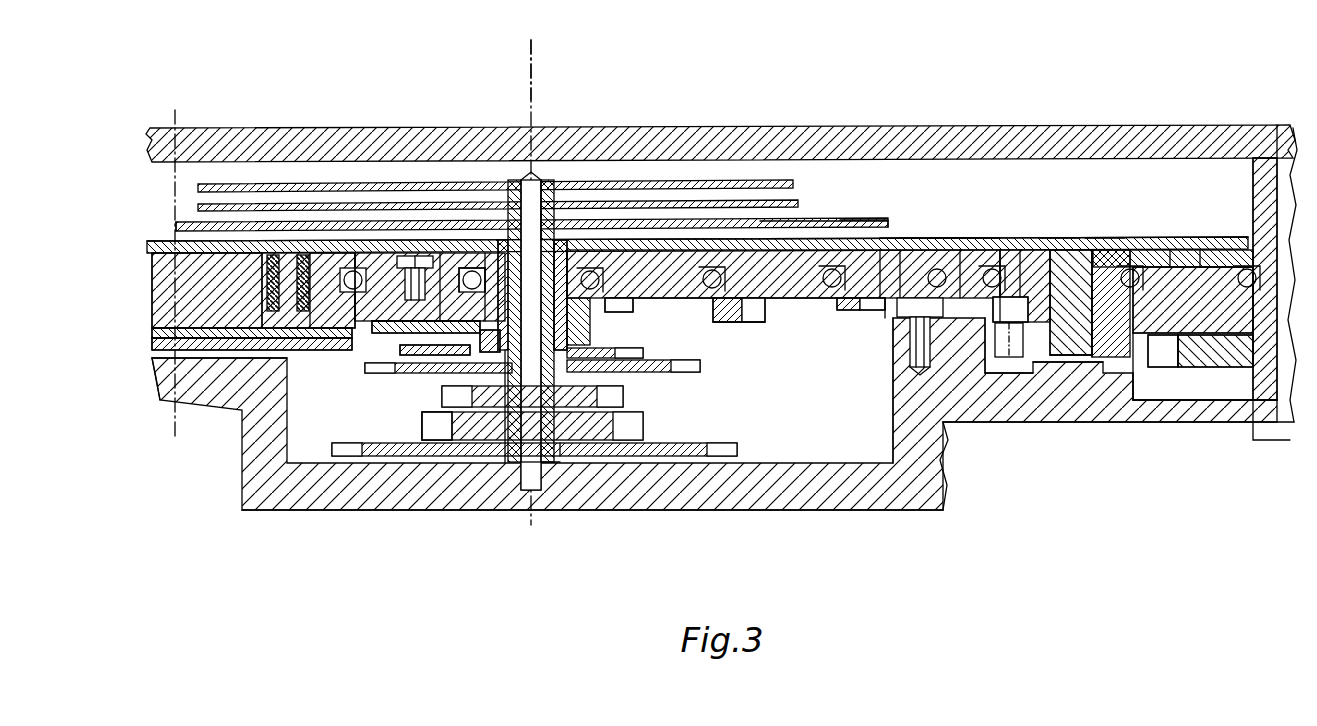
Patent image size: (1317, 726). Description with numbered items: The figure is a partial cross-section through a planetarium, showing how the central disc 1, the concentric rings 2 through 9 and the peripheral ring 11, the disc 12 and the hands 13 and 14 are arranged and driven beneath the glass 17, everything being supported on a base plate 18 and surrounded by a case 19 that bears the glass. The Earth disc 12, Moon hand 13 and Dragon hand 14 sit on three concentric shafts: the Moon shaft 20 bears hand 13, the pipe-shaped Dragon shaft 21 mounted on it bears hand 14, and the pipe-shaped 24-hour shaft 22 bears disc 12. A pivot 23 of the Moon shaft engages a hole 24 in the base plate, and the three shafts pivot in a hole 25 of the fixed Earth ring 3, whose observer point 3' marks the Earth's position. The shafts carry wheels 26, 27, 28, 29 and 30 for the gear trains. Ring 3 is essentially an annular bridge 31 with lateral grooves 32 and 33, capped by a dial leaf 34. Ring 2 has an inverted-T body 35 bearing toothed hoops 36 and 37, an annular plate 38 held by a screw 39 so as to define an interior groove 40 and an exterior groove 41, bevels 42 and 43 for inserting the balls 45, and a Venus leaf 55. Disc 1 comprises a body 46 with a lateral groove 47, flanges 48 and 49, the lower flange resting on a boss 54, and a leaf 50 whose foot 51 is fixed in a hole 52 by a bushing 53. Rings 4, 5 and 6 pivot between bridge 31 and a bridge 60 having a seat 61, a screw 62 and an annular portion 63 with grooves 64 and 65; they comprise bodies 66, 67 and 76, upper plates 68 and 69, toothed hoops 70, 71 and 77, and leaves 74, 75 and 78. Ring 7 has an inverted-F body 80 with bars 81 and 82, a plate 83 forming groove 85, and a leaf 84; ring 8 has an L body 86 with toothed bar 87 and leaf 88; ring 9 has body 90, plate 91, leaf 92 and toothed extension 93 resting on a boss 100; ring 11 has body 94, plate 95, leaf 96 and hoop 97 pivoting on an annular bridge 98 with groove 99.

The central disc 1 is at (153, 240).
The ring 2 is at (415, 257).
The Earth ring 3 is at (479, 185).
The observer point 3' is at (557, 68).
The ring 4 is at (658, 224).
The ring 5 is at (792, 222).
The ring 6 is at (925, 237).
The ring 7 is at (987, 260).
The ring 8 is at (1075, 255).
The ring 9 is at (1132, 260).
The peripheral ring 11 is at (1195, 255).
The disc 12 is at (856, 222).
The first hand 13 is at (648, 236).
The second hand 14 is at (720, 237).
The glass 17 is at (1035, 237).
The base plate 18 is at (305, 492).
The case 19 is at (1270, 422).
The Moon shaft 20 is at (518, 470).
The Dragon shaft 21 is at (558, 258).
The 24-hour shaft 22 is at (570, 258).
The pivot 23 is at (537, 492).
The hole 24 is at (548, 470).
The hole 25 is at (470, 462).
The wheel 26 is at (700, 367).
The wheel 27 is at (660, 352).
The wheel 28 is at (623, 397).
The wheel 29 is at (643, 426).
The wheel 30 is at (740, 448).
The bridge 31 is at (598, 456).
The groove 32 is at (400, 373).
The groove 33 is at (548, 200).
The annular leaf 34 is at (600, 248).
The annular body 35 is at (422, 425).
The hoop 36 is at (468, 333).
The hoop 37 is at (420, 333).
The annular plate 38 is at (462, 292).
The screw 39 is at (445, 270).
The interior groove 40 is at (382, 356).
The exterior groove 41 is at (445, 248).
The bevel 42 is at (386, 262).
The bevel 43 is at (500, 252).
The balls 45 is at (353, 268).
The body 46 is at (165, 290).
The lateral groove 47 is at (337, 255).
The flange 48 is at (345, 340).
The flange 49 is at (332, 350).
The circular leaf 50 is at (215, 238).
The foot 51 is at (303, 255).
The hole 52 is at (303, 350).
The bushing 53 is at (272, 255).
The boss 54 is at (225, 380).
The annular leaf 55 is at (375, 242).
The bridge 60 is at (888, 322).
The seat 61 is at (920, 368).
The screw 62 is at (897, 365).
The annular portion 63 is at (950, 238).
The groove 64 is at (915, 250).
The groove 65 is at (965, 250).
The body 66 is at (667, 300).
The body 67 is at (882, 335).
The upper plate 68 is at (742, 322).
The upper plate 69 is at (898, 238).
The hoop 70 is at (626, 312).
The hoop 71 is at (856, 312).
The annular leaf 74 is at (760, 260).
The annular leaf 75 is at (875, 250).
The annular body 76 is at (792, 300).
The hoop 77 is at (775, 335).
The annular leaf 78 is at (832, 240).
The body 80 is at (1060, 238).
The lower bar 81 is at (970, 392).
The median bar 82 is at (1010, 309).
The plate 83 is at (1020, 258).
The annular leaf 84 is at (1030, 255).
The groove 85 is at (1046, 425).
The body 86 is at (1100, 238).
The horizontal bar 87 is at (1002, 392).
The annular leaf 88 is at (1105, 252).
The body 90 is at (1090, 425).
The upper plate 91 is at (1145, 260).
The annular leaf 92 is at (1180, 252).
The horizontal extension 93 is at (1032, 400).
The body 94 is at (1195, 400).
The plate 95 is at (1178, 258).
The leaf 96 is at (1244, 260).
The hoop 97 is at (1160, 400).
The annular bridge 98 is at (1268, 442).
The groove 99 is at (1276, 140).
The boss 100 is at (1070, 395).